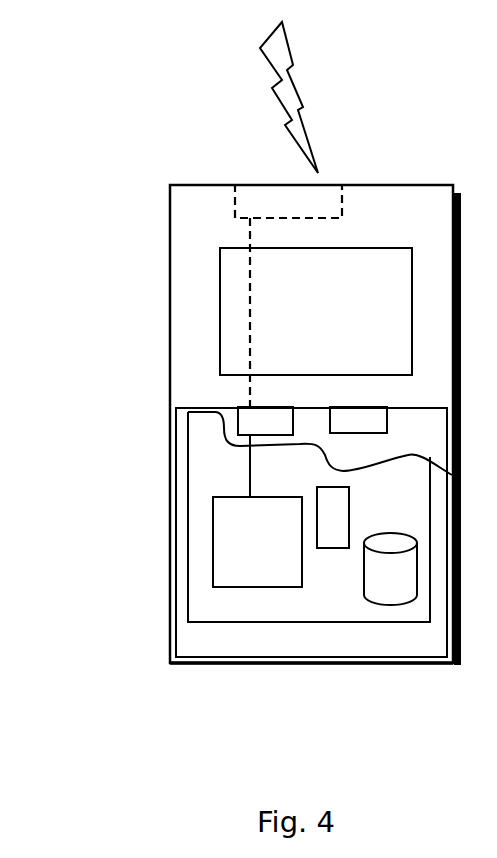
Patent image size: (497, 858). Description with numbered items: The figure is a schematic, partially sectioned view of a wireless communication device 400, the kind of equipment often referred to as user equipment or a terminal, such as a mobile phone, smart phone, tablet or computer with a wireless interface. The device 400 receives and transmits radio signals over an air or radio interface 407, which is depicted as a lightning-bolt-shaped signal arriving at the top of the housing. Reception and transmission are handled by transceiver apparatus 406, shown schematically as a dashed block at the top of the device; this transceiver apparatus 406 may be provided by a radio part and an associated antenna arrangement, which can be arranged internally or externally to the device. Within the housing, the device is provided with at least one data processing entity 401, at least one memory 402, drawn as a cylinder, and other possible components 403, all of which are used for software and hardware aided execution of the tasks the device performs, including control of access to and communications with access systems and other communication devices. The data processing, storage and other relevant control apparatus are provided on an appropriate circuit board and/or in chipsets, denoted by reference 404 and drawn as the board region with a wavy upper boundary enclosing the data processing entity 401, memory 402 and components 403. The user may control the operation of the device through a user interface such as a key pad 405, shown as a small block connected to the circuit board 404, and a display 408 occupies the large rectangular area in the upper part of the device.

The communication device 400 is at (170, 223).
The data processing entity 401 is at (218, 527).
The memory 402 is at (385, 582).
The other possible components 403 is at (333, 503).
The circuit board 404 is at (212, 607).
The key pad 405 is at (240, 420).
The transceiver apparatus 406 is at (330, 197).
The air or radio interface 407 is at (324, 112).
The display 408 is at (235, 298).